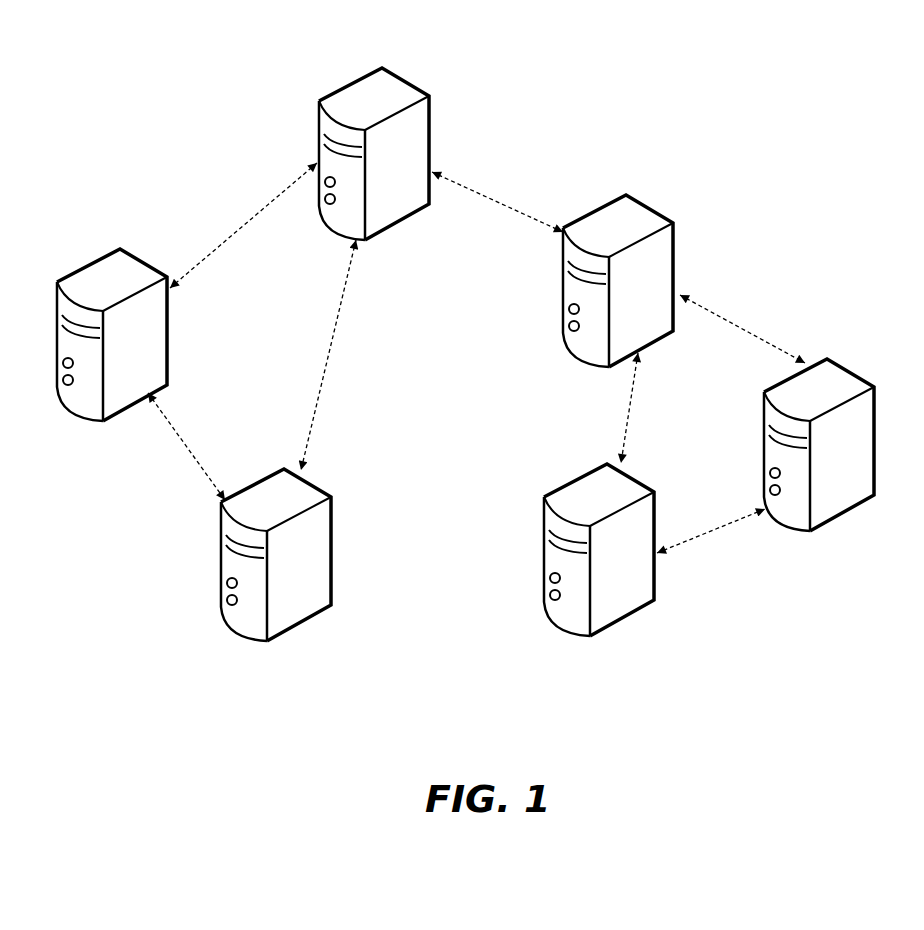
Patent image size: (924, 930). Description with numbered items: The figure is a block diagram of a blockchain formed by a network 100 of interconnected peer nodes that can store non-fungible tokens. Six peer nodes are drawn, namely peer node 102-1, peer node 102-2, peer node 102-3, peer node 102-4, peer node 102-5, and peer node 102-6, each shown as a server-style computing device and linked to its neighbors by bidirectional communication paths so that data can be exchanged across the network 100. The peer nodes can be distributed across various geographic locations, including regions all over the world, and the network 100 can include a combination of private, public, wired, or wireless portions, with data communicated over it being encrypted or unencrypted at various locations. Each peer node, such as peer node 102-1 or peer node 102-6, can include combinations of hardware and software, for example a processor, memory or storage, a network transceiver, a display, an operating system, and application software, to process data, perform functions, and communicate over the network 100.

The network 100 is at (872, 85).
The peer node 102-1 is at (93, 259).
The peer node 102-2 is at (410, 216).
The peer node 102-3 is at (287, 634).
The peer node 102-4 is at (621, 194).
The peer node 102-5 is at (619, 624).
The peer node 102-6 is at (828, 357).